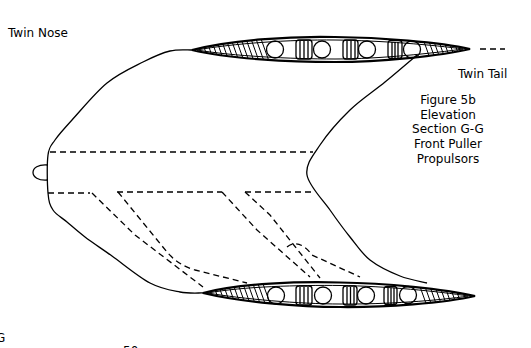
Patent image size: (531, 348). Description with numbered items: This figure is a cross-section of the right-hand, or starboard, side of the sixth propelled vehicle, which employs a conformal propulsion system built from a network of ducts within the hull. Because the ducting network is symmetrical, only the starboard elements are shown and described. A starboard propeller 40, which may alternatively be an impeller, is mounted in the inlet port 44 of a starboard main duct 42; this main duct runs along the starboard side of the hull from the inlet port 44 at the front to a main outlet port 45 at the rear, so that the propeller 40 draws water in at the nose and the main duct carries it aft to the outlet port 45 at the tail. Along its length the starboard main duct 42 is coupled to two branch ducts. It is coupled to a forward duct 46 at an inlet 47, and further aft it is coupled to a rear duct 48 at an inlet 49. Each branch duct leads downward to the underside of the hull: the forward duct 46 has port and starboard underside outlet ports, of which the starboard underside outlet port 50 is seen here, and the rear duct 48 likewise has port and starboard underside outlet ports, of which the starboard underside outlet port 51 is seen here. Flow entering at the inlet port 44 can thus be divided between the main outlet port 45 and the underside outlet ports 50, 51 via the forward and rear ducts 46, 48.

The starboard propeller 40 is at (37, 165).
The starboard main duct 42 is at (153, 163).
The inlet port 44 is at (60, 163).
The main outlet port 45 is at (305, 175).
The forward duct 46 is at (135, 228).
The inlet 47 is at (112, 200).
The rear duct 48 is at (287, 242).
The inlet 49 is at (232, 193).
The starboard underside outlet port 50 is at (175, 257).
The starboard underside outlet port 51 is at (303, 262).